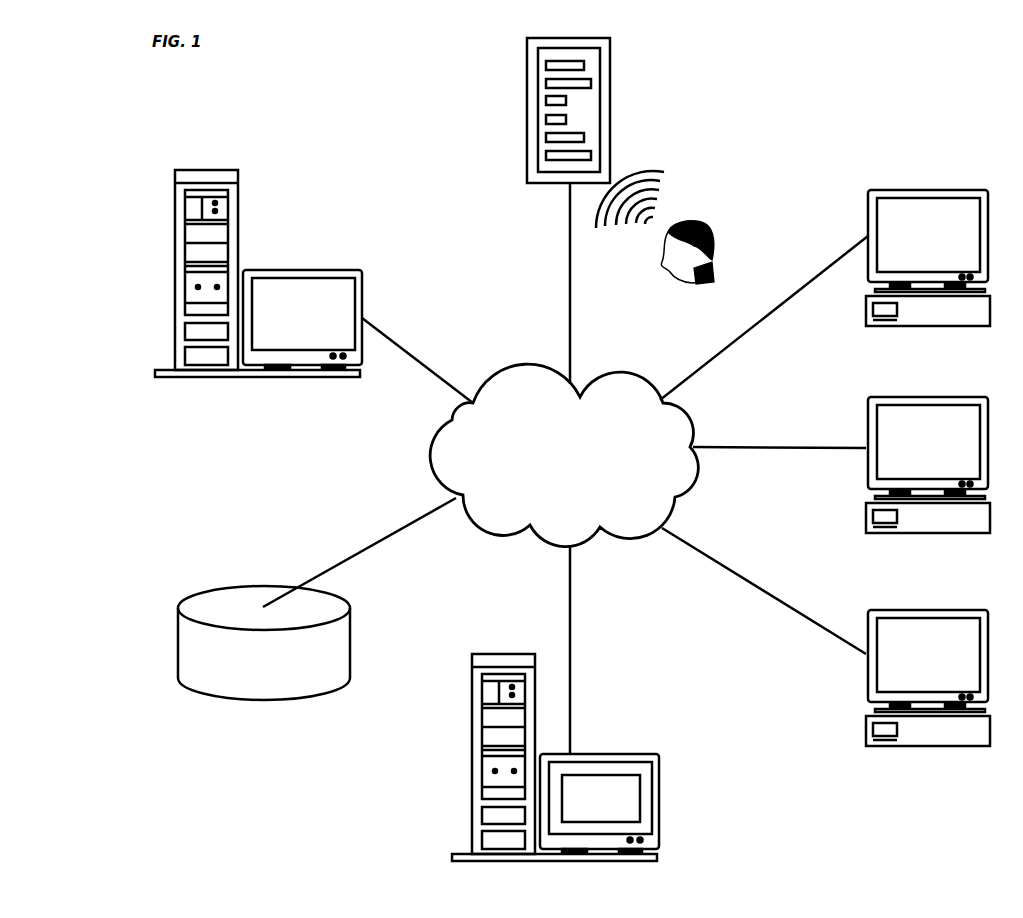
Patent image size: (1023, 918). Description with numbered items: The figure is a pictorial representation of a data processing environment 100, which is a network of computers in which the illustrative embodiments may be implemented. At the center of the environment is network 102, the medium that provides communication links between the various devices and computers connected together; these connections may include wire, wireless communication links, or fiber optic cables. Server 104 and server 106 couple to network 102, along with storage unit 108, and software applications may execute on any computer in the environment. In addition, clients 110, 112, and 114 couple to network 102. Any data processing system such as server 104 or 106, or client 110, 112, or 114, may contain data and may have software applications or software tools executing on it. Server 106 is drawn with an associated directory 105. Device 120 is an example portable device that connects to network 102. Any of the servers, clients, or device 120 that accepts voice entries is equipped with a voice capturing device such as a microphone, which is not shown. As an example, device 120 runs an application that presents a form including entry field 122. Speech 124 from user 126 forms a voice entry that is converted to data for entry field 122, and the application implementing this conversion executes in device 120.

The data processing environment 100 is at (100, 206).
The network 102 is at (558, 479).
The server 104 is at (311, 404).
The directory 105 is at (640, 796).
The server 106 is at (608, 887).
The storage unit 108 is at (250, 679).
The client 110 is at (974, 558).
The client 112 is at (970, 771).
The client 114 is at (974, 351).
The device 120 is at (616, 32).
The entry field 122 is at (582, 157).
The speech 124 is at (660, 187).
The user 126 is at (704, 325).